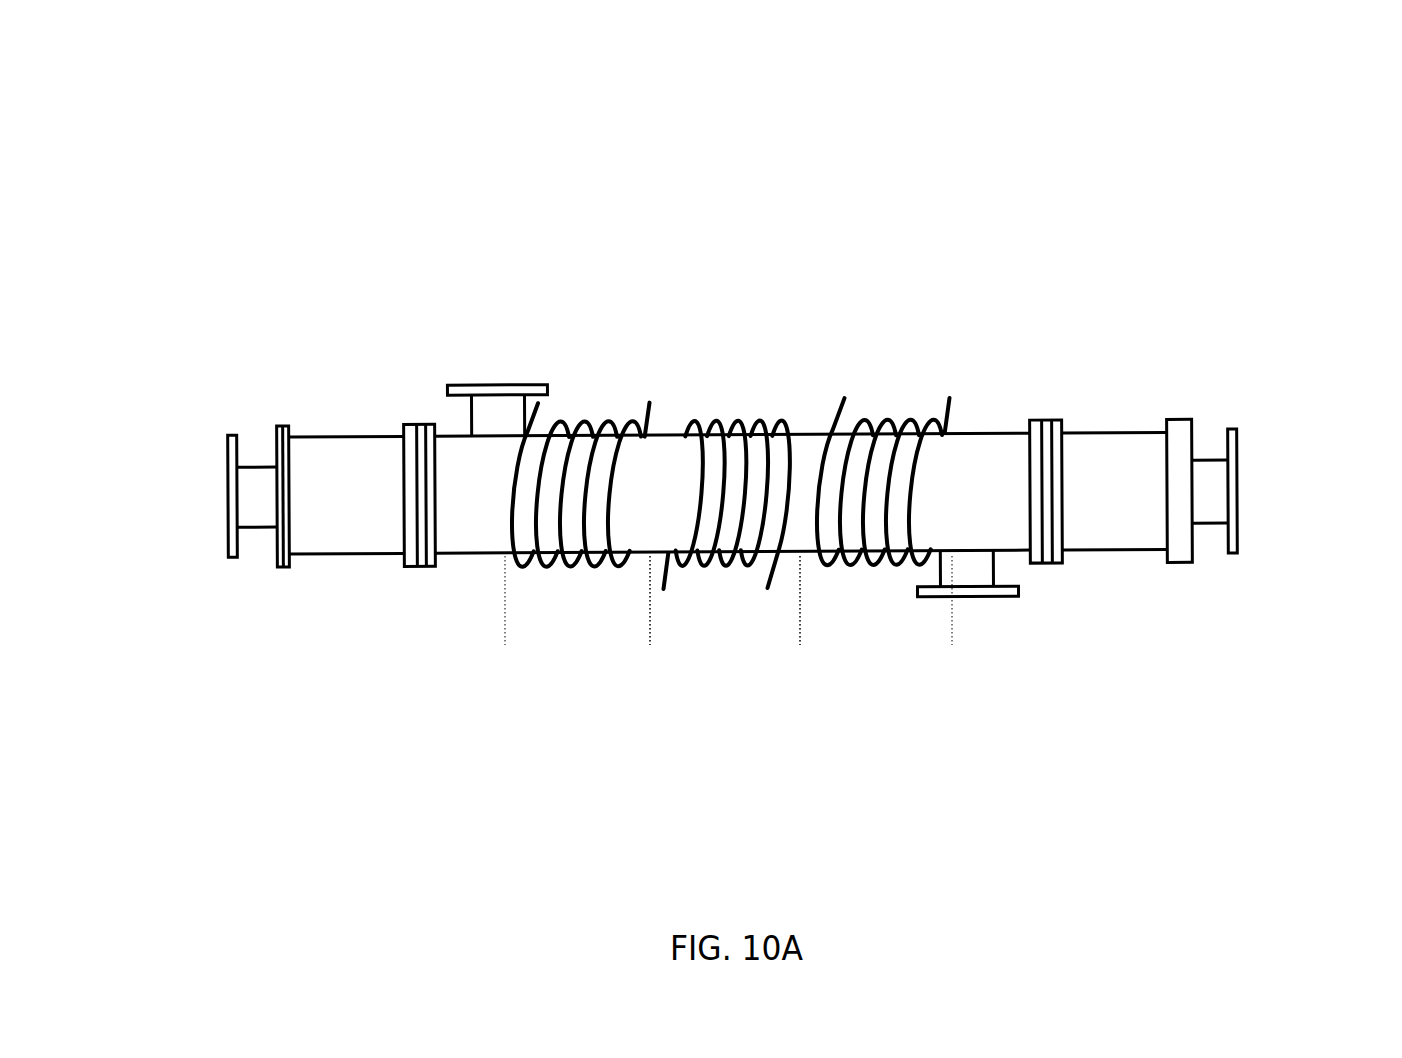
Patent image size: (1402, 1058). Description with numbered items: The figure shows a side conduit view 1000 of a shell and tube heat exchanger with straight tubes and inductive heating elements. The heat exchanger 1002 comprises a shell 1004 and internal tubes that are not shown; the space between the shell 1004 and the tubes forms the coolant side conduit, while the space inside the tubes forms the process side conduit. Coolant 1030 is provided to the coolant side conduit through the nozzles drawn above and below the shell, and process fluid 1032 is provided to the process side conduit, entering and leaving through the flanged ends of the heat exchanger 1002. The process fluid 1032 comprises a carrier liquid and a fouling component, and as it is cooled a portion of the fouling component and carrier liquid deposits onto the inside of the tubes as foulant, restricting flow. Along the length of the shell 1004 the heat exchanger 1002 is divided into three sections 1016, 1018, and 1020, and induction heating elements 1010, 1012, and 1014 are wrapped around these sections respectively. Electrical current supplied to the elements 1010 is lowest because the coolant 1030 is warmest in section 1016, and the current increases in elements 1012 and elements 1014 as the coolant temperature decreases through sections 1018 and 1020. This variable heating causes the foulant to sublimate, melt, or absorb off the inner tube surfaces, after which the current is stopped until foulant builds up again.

The side conduit view of shell and tube heat exchanger 1000 is at (195, 96).
The heat exchanger 1002 is at (277, 426).
The shell 1004 is at (993, 433).
The induction heating elements 1010 is at (608, 415).
The induction heating elements 1012 is at (760, 415).
The induction heating elements 1014 is at (910, 415).
The section 1016 is at (640, 632).
The section 1018 is at (790, 632).
The section 1020 is at (942, 632).
The coolant 1030 is at (497, 378).
The process fluid 1032 is at (213, 499).